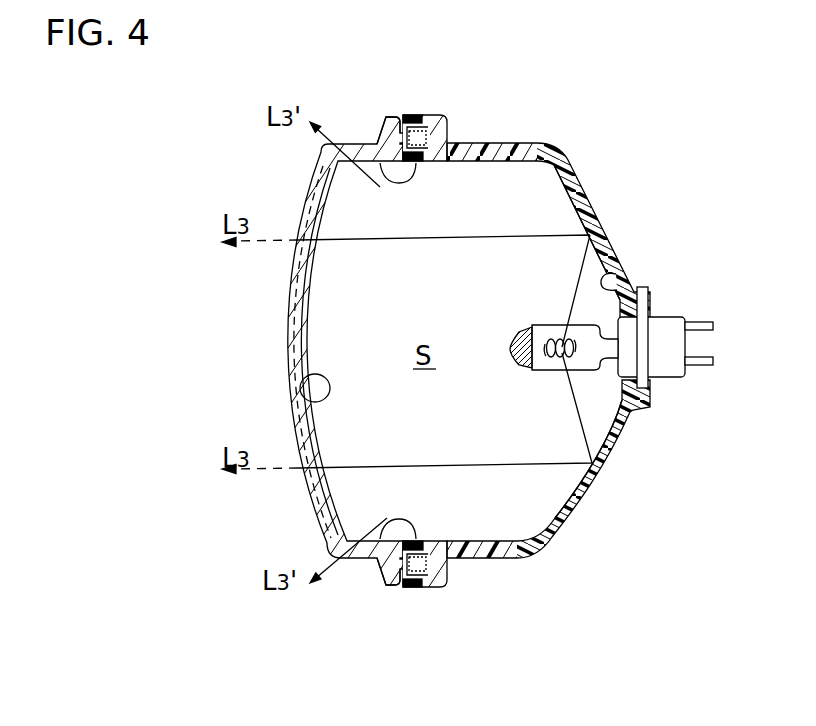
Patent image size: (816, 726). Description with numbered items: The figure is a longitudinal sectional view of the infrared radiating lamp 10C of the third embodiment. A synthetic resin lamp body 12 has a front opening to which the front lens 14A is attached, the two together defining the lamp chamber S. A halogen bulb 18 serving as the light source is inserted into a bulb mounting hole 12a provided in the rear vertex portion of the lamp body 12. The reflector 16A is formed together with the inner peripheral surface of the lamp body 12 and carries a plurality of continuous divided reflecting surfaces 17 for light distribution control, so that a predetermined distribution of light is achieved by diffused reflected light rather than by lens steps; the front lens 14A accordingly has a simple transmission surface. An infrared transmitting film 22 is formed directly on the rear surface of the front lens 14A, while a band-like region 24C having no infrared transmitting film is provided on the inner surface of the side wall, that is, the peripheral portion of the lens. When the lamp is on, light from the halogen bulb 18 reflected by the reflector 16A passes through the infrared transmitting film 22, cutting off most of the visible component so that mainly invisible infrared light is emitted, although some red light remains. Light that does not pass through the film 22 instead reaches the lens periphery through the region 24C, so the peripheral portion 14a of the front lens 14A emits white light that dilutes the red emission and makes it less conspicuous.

The infrared radiating lamp 10C is at (283, 194).
The lamp body 12 is at (583, 183).
The bulb mounting hole 12a is at (633, 377).
The front lens 14A is at (293, 329).
The peripheral portion of the front lens 14a is at (377, 144).
The reflector 16A is at (620, 270).
The divided reflecting surfaces 17 is at (659, 341).
The halogen bulb 18 is at (588, 366).
The infrared transmitting film 22 is at (300, 392).
The band-like region having no infrared transmitting film 24C is at (406, 163).